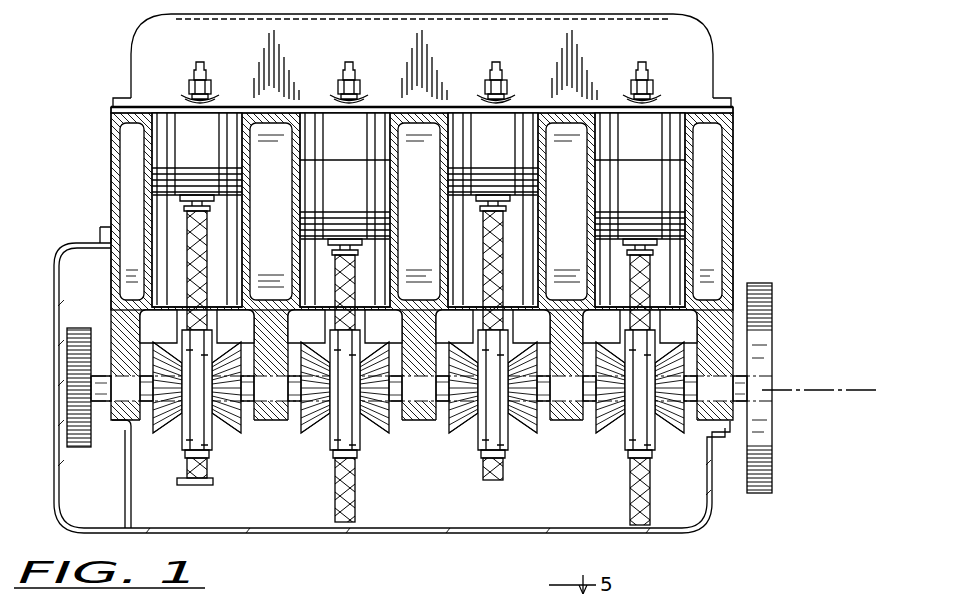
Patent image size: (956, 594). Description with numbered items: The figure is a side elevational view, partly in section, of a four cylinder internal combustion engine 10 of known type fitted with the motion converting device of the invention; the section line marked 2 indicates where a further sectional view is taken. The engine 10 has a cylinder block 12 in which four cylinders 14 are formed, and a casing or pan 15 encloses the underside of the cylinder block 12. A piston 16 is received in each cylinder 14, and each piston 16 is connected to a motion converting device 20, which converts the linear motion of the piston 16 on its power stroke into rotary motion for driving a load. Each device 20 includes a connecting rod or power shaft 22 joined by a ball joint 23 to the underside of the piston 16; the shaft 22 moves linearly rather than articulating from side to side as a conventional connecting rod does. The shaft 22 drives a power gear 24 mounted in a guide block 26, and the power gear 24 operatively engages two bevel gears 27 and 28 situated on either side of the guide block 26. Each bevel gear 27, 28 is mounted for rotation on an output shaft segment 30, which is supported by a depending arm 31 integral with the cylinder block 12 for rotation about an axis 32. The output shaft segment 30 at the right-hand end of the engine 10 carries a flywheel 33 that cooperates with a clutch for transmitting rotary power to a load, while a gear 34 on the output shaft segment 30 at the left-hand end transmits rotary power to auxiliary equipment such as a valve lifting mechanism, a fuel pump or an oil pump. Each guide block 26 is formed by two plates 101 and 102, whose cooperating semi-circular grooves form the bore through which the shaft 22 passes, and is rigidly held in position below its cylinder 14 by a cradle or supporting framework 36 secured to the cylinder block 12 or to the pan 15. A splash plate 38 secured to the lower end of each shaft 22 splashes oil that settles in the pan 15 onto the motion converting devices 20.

The internal combustion engine 10 is at (732, 80).
The cylinder block 12 is at (737, 209).
The cylinders 14 is at (702, 257).
The pan 15 is at (595, 533).
The piston 16 is at (200, 138).
The motion converting device 20 is at (416, 407).
The connecting rod or power shaft 22 is at (498, 272).
The ball joint 23 is at (510, 200).
The power gear 24 is at (175, 343).
The guide block 26 is at (210, 472).
The bevel gear 27 is at (452, 424).
The bevel gear 28 is at (527, 429).
The output shaft segment 30 is at (100, 402).
The depending arm 31 is at (425, 338).
The axis 32 is at (853, 390).
The flywheel 33 is at (767, 382).
The gear 34 is at (70, 368).
The cradle or supporting framework 36 is at (184, 458).
The splash plate 38 is at (184, 486).
The plate 101 is at (183, 420).
The plate 102 is at (503, 348).
The section line 2- 2 is at (321, 318).